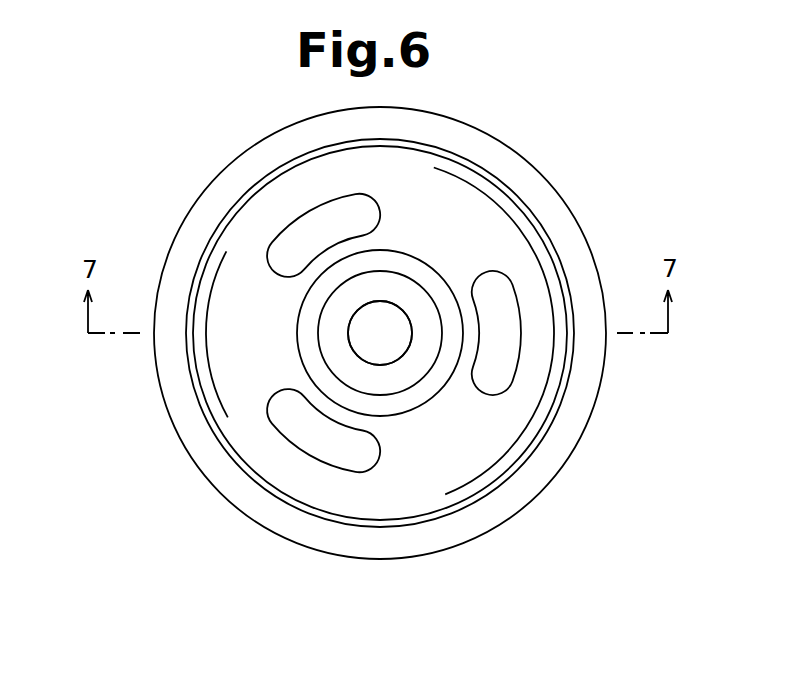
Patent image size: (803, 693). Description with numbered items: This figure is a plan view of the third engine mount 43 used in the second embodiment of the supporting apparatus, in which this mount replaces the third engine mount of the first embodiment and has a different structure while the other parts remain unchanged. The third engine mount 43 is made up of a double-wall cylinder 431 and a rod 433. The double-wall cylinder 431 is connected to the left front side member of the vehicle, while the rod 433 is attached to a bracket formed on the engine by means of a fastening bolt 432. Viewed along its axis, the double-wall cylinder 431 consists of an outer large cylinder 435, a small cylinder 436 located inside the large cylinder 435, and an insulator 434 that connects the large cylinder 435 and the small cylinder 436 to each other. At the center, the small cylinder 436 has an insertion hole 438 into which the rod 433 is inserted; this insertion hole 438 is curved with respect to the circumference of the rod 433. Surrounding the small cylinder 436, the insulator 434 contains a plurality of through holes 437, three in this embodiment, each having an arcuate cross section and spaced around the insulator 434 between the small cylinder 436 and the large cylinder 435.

The third engine mount 43 is at (437, 333).
The double-wall cylinder 431 is at (628, 373).
The fastening bolt 432 is at (401, 288).
The rod 433 is at (378, 312).
The insulator 434 is at (380, 331).
The large cylinder 435 is at (557, 450).
The small cylinder 436 is at (428, 283).
The through holes 437 is at (506, 354).
The insertion hole 438 is at (424, 371).